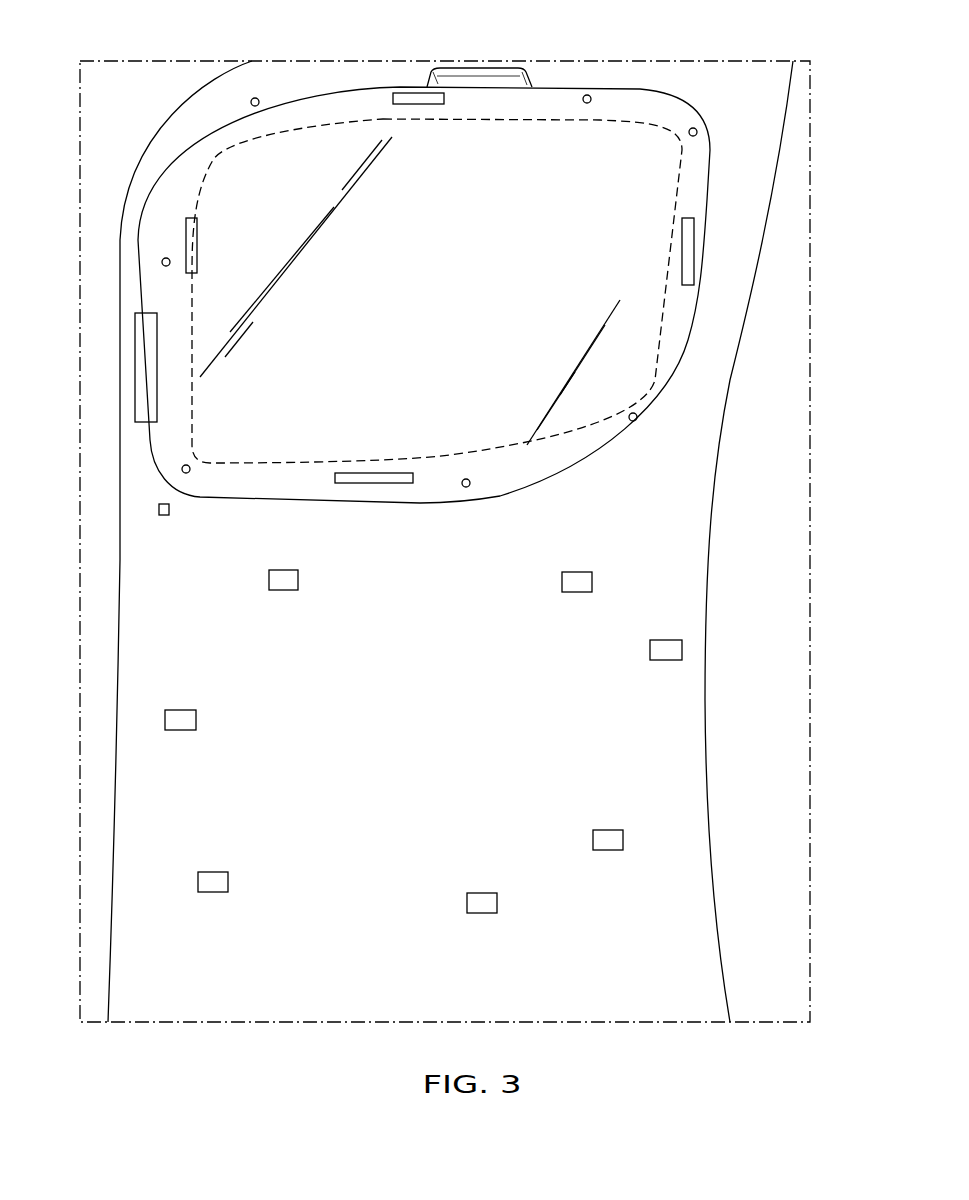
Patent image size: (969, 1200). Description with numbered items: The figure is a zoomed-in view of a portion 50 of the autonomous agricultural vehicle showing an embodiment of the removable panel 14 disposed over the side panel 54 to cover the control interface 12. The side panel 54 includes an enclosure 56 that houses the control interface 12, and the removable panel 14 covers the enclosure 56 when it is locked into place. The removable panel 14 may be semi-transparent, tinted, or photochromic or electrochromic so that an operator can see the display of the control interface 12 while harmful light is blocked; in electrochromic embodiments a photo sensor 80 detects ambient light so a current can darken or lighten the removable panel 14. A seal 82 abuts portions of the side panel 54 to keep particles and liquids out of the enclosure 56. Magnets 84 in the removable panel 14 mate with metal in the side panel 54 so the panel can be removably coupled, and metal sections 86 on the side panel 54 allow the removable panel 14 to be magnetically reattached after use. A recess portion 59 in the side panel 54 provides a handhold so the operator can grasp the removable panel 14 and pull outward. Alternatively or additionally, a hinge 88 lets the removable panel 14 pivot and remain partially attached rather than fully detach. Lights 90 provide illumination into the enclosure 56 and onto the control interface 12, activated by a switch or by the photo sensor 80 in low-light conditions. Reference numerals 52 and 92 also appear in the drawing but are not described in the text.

The control interface 12 is at (380, 78).
The removable panel 14 is at (235, 500).
The portion 50 is at (256, 34).
The glass panel 52 is at (602, 117).
The side panel 54 is at (755, 83).
The enclosure 56 is at (217, 213).
The recess portion 59 is at (477, 67).
The photo sensor 80 is at (683, 95).
The seal 82 is at (210, 165).
The magnets 84 is at (258, 104).
The metal sections 86 is at (298, 582).
The hinge 88 is at (135, 368).
The lights 90 is at (420, 104).
The small bracket 92 is at (158, 508).